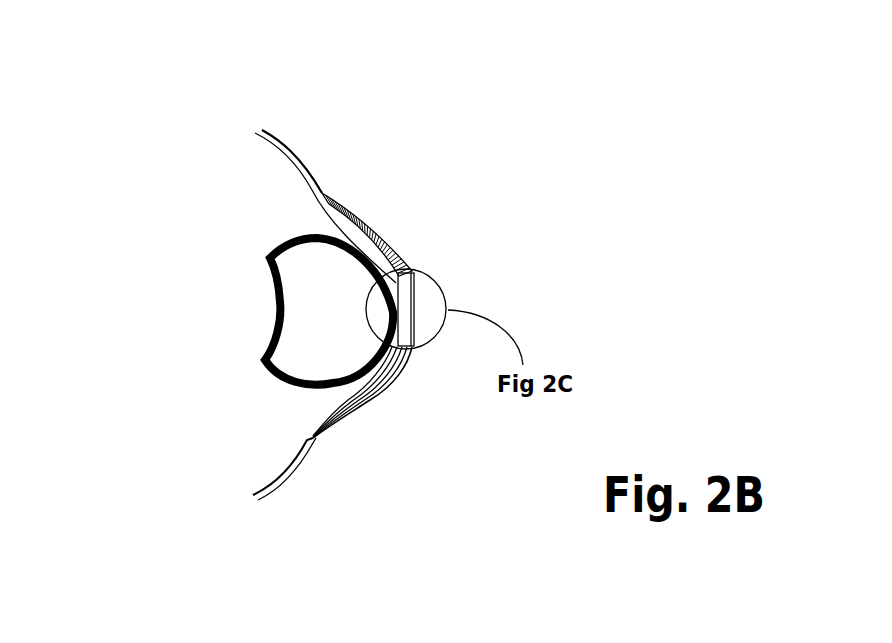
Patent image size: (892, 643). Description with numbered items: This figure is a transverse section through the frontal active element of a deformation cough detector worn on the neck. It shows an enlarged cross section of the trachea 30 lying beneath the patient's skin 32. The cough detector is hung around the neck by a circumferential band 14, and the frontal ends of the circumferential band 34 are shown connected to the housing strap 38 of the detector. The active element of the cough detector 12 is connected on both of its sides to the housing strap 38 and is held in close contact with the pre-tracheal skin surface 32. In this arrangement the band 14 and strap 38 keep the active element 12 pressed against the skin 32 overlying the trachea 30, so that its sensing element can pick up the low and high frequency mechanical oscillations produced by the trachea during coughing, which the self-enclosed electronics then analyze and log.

The active element of the cough detector 12 is at (420, 297).
The circumferential band 14 is at (278, 132).
The trachea 30 is at (270, 378).
The skin 32 is at (293, 170).
The frontal ends of the circumferential band 34 is at (293, 160).
The housing strap 38 is at (381, 232).